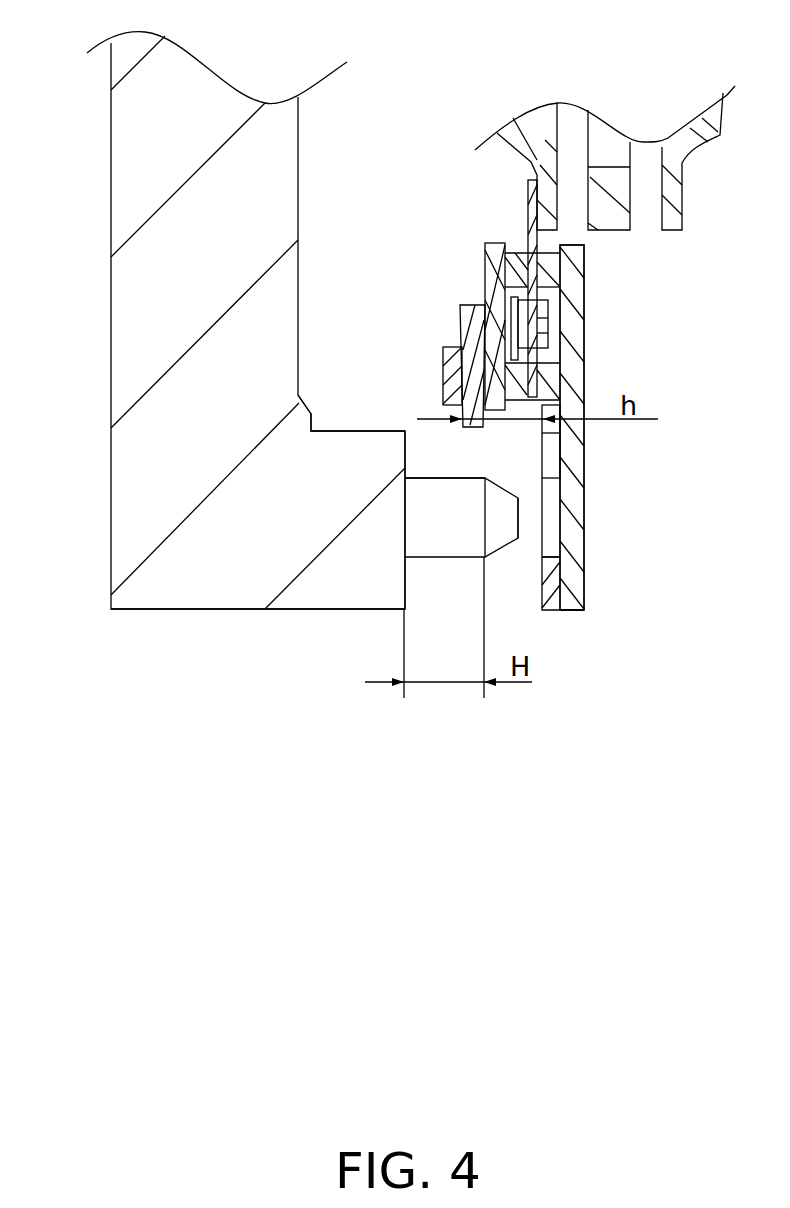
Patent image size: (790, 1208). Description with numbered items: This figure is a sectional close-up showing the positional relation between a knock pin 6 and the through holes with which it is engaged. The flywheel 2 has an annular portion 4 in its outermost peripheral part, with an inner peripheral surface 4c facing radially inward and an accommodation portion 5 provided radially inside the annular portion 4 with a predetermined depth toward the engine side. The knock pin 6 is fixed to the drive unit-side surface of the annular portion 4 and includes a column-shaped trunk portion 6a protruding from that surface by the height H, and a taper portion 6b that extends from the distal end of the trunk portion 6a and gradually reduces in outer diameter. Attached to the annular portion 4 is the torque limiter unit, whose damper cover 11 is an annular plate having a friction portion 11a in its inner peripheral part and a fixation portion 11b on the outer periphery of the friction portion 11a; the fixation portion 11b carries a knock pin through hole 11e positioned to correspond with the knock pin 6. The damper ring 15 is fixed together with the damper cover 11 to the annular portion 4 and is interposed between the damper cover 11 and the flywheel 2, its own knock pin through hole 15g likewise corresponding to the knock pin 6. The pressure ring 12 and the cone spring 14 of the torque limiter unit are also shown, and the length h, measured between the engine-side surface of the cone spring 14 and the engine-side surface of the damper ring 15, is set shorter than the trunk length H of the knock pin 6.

The flywheel 2 is at (103, 505).
The annular portion 4 is at (327, 583).
The inner peripheral surface 4c is at (357, 431).
The accommodation portion 5 is at (298, 158).
The knock pin 6 is at (497, 567).
The trunk portion 6a is at (420, 493).
The taper portion 6b is at (558, 445).
The damper cover 11 is at (580, 620).
The friction portion 11a is at (573, 332).
The fixation portion 11b is at (575, 568).
The knock pin through hole 11e is at (580, 566).
The pressure ring 12 is at (492, 245).
The cone spring 14 is at (473, 307).
The damper ring 15 is at (542, 600).
The knock pin through hole 15g is at (503, 497).